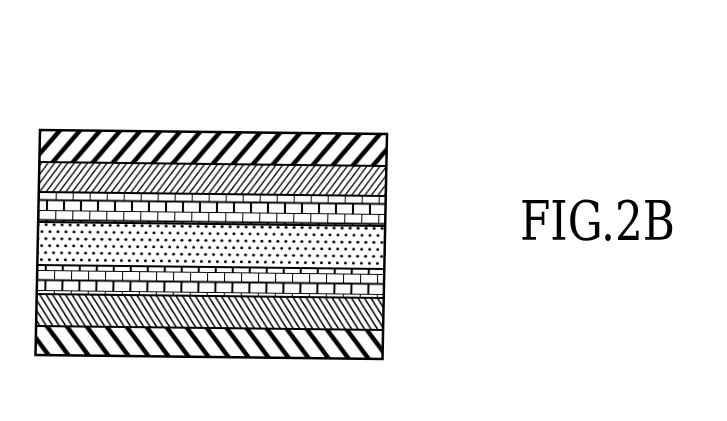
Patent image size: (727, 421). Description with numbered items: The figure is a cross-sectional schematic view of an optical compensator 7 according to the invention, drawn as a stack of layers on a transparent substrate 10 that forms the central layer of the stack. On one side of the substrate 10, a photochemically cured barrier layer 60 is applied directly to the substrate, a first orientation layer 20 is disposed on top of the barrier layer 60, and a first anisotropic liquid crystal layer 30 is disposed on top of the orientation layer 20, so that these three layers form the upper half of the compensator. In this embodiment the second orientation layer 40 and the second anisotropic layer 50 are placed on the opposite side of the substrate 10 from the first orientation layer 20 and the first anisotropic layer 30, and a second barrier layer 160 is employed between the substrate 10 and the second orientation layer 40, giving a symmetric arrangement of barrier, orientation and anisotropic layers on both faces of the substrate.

The optical compensator 7 is at (236, 110).
The first anisotropic liquid crystal layer 30 is at (386, 152).
The first orientation layer 20 is at (386, 184).
The barrier layer 60 is at (386, 213).
The substrate 10 is at (386, 258).
The second barrier layer 160 is at (386, 287).
The second orientation layer 40 is at (386, 321).
The second anisotropic layer 50 is at (386, 349).